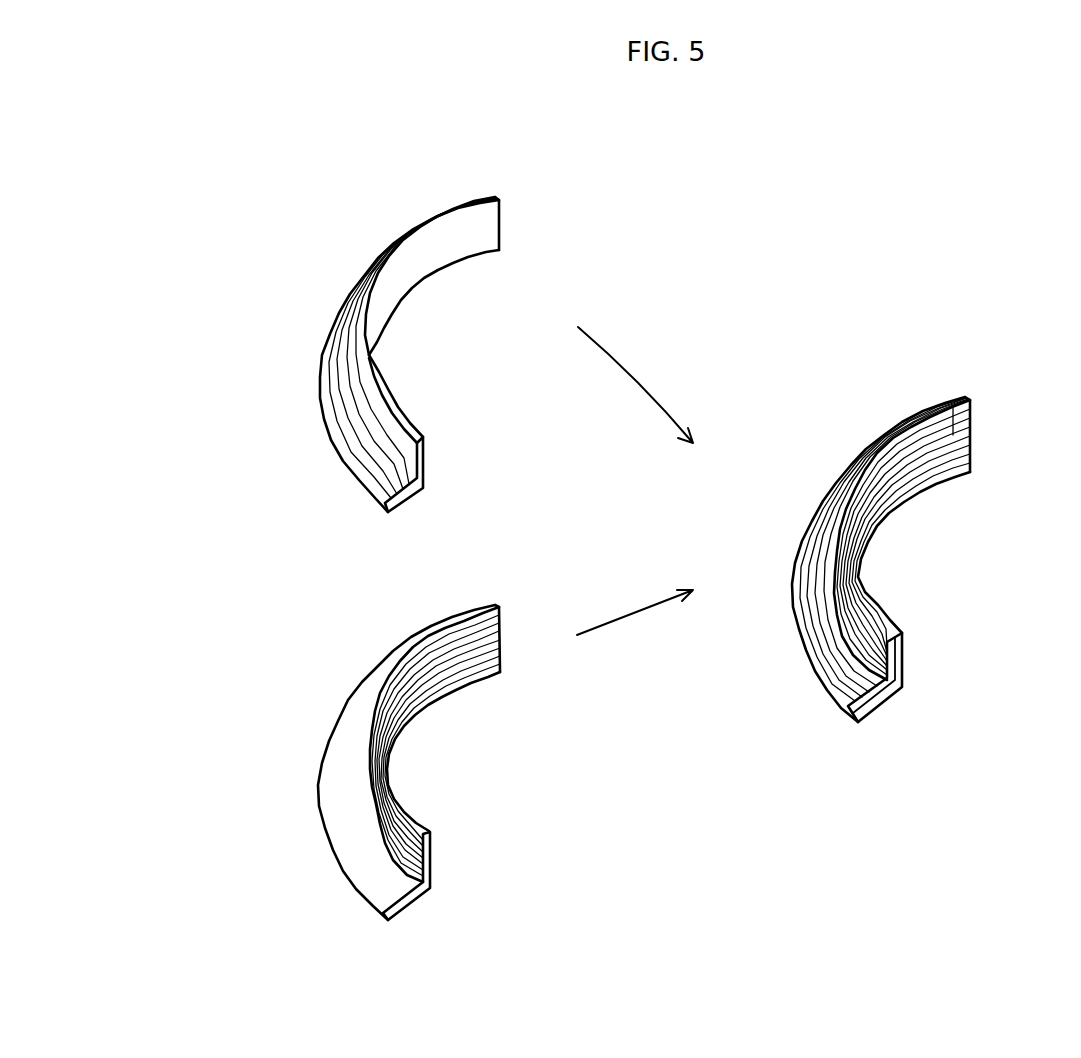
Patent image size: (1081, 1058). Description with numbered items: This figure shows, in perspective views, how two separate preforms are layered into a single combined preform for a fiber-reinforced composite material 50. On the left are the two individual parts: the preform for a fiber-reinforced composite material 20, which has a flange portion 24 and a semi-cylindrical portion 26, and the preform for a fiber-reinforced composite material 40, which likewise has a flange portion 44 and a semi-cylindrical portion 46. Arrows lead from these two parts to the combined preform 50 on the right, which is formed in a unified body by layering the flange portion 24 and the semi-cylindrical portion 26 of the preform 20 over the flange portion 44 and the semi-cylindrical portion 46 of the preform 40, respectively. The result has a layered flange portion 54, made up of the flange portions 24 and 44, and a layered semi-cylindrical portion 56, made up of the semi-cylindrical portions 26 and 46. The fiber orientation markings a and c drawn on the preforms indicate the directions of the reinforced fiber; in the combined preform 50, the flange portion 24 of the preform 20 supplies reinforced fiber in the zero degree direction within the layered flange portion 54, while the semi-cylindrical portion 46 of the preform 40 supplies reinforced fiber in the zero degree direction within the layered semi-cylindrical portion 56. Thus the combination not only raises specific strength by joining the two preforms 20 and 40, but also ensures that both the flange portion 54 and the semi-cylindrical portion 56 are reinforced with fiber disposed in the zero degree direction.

The preform for a fiber-reinforced composite material 20 is at (355, 208).
The flange portion 24 is at (373, 470).
The semi-cylindrical portion 26 is at (445, 253).
The preform for a fiber-reinforced composite material 40 is at (321, 648).
The flange portion 44 is at (357, 852).
The semi-cylindrical portion 46 is at (463, 653).
The combined preform for a fiber-reinforced composite material 50 is at (1019, 382).
The layered flange portion 54 is at (805, 573).
The layered semi-cylindrical portion 56 is at (915, 535).
The lamination direction of first segment a is at (333, 378).
The lamination direction of second segment c is at (433, 683).